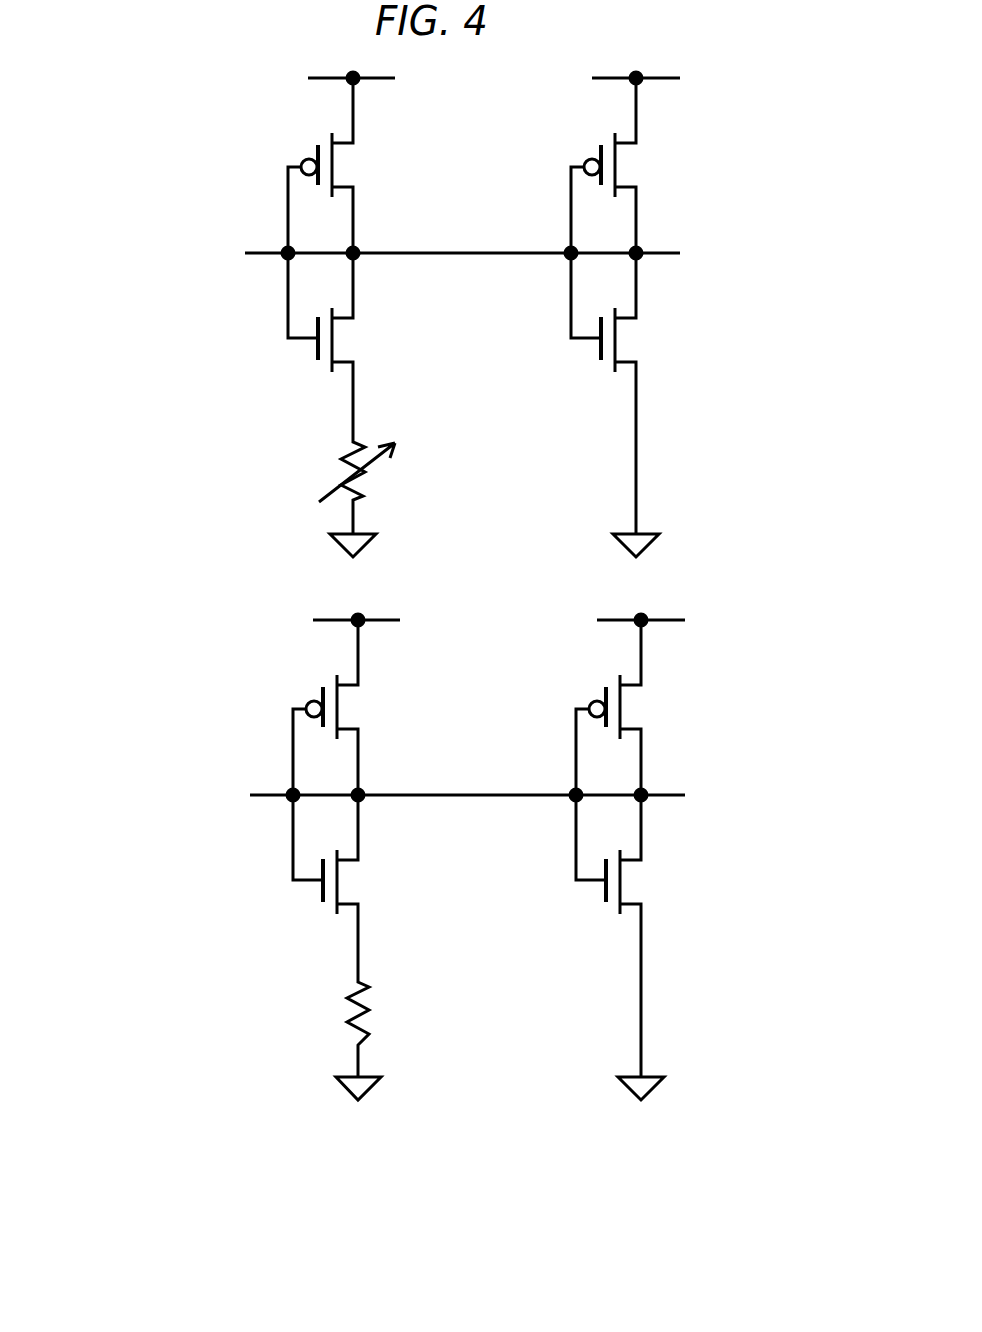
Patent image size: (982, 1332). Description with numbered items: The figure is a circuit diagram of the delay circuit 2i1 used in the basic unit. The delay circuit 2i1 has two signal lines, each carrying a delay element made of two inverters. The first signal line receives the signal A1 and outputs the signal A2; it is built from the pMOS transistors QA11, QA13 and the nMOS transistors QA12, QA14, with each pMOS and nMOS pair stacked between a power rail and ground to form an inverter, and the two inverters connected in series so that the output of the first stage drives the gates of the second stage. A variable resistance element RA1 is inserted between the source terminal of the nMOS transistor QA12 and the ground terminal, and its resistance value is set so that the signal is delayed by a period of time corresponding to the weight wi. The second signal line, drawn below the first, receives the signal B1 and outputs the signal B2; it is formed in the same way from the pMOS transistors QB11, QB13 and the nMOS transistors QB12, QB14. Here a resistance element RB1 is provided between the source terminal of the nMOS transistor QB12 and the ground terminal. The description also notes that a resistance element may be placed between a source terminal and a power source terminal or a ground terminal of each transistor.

The delay circuit 2i1 is at (482, 1253).
The pMOS transistor QA11 is at (310, 143).
The nMOS transistor QA12 is at (310, 360).
The pMOS transistor QA13 is at (592, 143).
The nMOS transistor QA14 is at (592, 360).
The variable resistance element RA1 is at (330, 460).
The signal A1 is at (313, 254).
The signal A2 is at (595, 254).
The pMOS transistor QB11 is at (315, 685).
The nMOS transistor QB12 is at (315, 902).
The pMOS transistor QB13 is at (597, 685).
The nMOS transistor QB14 is at (597, 902).
The resistance element RB1 is at (335, 1002).
The signal B1 is at (318, 798).
The signal B2 is at (600, 798).